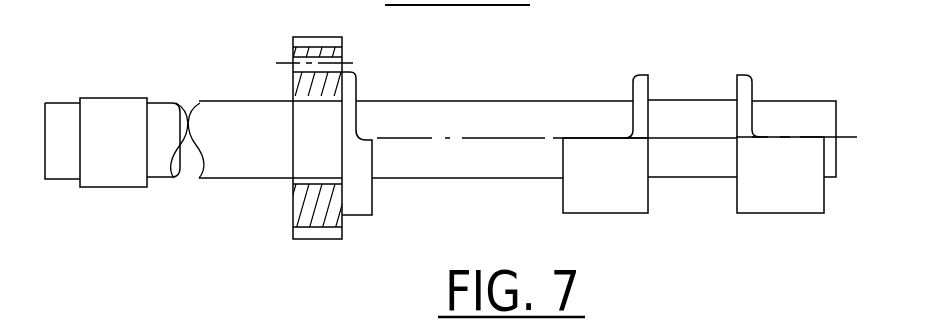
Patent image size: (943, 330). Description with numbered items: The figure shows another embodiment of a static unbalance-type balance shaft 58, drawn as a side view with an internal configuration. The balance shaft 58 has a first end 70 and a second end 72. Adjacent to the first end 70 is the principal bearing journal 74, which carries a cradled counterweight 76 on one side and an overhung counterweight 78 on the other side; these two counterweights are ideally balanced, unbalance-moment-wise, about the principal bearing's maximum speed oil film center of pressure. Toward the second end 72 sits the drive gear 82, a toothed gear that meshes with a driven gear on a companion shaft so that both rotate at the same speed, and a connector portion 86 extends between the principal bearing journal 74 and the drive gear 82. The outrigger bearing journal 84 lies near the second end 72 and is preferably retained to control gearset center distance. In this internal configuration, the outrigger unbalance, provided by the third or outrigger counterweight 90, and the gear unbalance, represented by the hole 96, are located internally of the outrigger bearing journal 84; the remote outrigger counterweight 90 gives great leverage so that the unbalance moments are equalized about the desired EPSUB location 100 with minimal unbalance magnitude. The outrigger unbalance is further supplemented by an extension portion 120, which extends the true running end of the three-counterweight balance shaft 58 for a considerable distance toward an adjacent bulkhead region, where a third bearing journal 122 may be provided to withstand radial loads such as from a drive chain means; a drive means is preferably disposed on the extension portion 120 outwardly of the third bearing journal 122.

The balance shaft 58 is at (485, 68).
The first end 70 is at (844, 108).
The second end 72 is at (284, 82).
The principal bearing journal 74 is at (688, 97).
The cradled counterweight 76 is at (606, 200).
The overhung counterweight 78 is at (788, 200).
The drive gear 82 is at (300, 202).
The outrigger bearing journal 84 is at (238, 108).
The connector portion 86 is at (493, 167).
The outrigger counterweight 90 is at (360, 203).
The hole 96 is at (342, 55).
The EPSUB location 100 is at (693, 178).
The extension portion 120 is at (162, 177).
The third bearing journal 122 is at (110, 97).